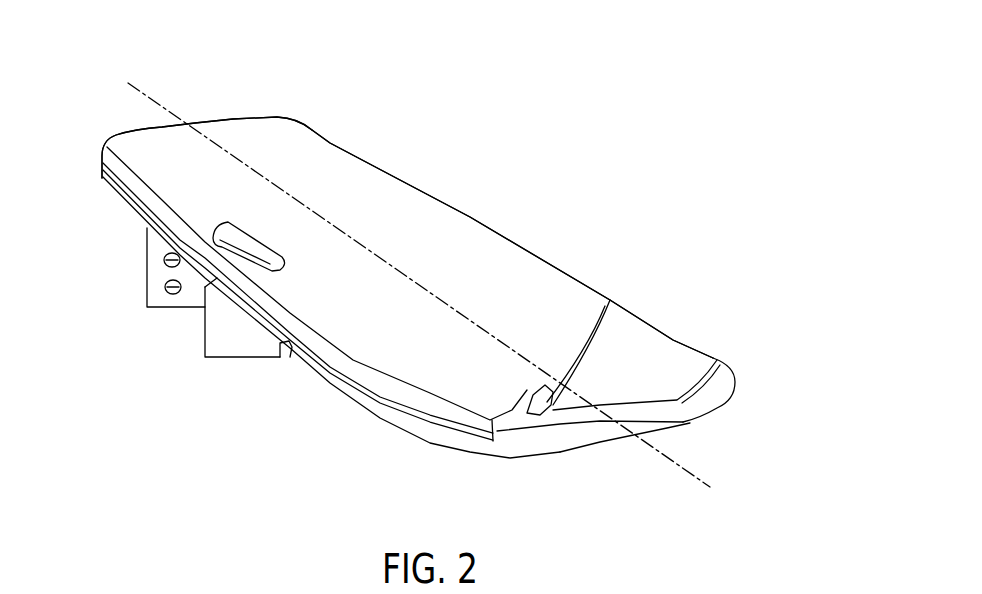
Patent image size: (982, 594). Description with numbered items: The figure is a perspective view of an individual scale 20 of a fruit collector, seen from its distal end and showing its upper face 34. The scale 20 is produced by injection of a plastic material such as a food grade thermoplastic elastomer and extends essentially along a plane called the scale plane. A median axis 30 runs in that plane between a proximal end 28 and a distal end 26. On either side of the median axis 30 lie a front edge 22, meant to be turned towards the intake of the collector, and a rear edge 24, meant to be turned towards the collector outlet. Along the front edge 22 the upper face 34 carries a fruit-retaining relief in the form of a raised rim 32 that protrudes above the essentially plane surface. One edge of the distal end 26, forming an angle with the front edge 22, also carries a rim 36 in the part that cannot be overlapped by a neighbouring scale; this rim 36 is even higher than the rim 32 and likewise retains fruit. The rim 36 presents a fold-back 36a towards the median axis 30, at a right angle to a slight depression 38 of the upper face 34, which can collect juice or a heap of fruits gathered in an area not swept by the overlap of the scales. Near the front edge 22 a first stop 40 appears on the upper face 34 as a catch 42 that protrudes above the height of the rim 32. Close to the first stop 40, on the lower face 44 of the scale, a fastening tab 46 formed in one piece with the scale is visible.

The scale 20 is at (592, 148).
The front edge 22 is at (300, 360).
The rear edge 24 is at (502, 227).
The distal end 26 is at (682, 419).
The proximal end 28 is at (233, 119).
The median axis 30 is at (163, 106).
The raised rim 32 is at (293, 323).
The upper face 34 is at (382, 203).
The rim 36 is at (677, 400).
The fold-back 36a is at (546, 412).
The depression 38 is at (656, 360).
The first stop 40 is at (211, 219).
The catch 42 is at (248, 228).
The lower face 44 is at (330, 384).
The fastening tab 46 is at (154, 270).